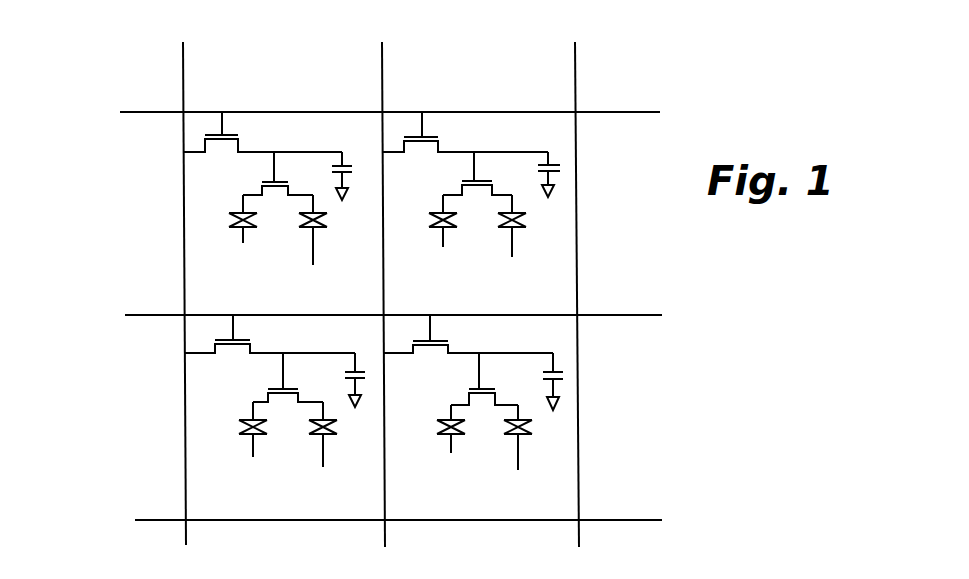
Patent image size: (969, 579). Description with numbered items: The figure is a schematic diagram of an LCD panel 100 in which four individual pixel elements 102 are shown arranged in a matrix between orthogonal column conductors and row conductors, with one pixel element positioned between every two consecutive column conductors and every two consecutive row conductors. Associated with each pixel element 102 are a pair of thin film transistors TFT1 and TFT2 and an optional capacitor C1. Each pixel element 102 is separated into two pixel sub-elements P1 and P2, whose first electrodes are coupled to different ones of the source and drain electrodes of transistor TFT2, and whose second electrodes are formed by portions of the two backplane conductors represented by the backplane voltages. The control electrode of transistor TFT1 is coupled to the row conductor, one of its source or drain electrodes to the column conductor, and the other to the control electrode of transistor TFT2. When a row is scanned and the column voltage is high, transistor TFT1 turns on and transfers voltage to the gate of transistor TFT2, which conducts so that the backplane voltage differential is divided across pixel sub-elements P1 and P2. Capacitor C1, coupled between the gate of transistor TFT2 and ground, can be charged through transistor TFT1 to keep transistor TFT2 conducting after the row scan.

The LCD panel 100 is at (690, 65).
The pixel element 102 is at (206, 212).
The thin film transistor TFT1 is at (368, 234).
The thin film transistor TFT2 is at (356, 278).
The pixel sub-element P1 is at (358, 333).
The pixel sub-element P2 is at (433, 332).
The capacitor C1 is at (456, 271).